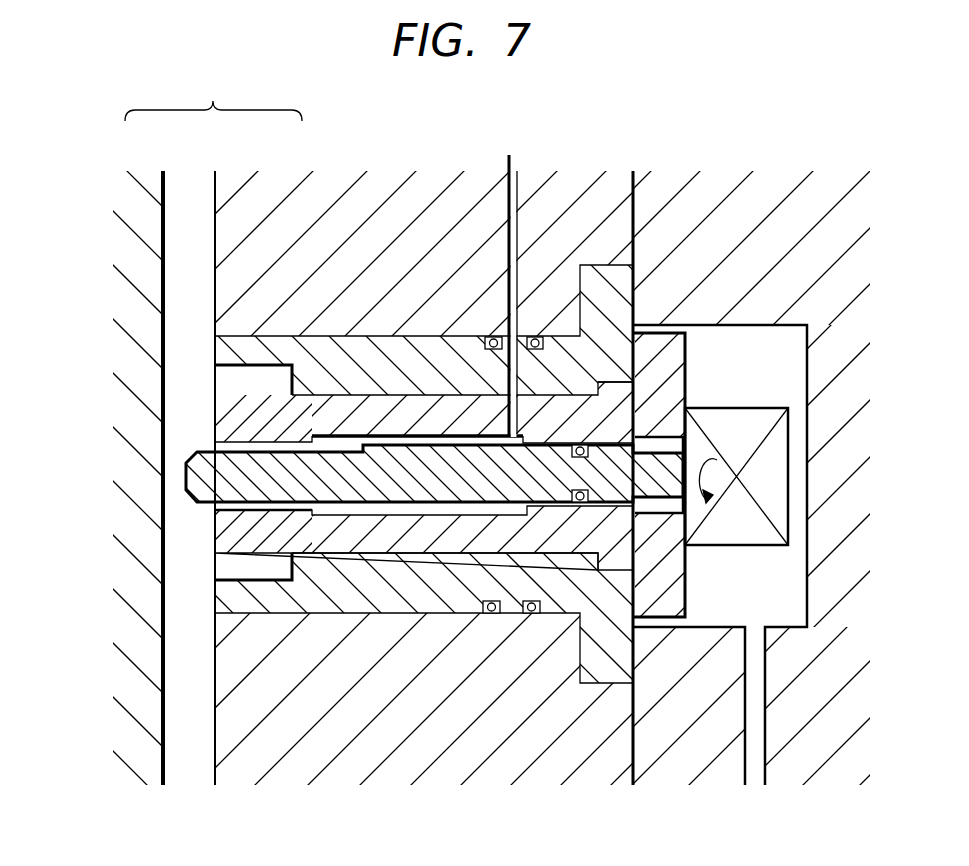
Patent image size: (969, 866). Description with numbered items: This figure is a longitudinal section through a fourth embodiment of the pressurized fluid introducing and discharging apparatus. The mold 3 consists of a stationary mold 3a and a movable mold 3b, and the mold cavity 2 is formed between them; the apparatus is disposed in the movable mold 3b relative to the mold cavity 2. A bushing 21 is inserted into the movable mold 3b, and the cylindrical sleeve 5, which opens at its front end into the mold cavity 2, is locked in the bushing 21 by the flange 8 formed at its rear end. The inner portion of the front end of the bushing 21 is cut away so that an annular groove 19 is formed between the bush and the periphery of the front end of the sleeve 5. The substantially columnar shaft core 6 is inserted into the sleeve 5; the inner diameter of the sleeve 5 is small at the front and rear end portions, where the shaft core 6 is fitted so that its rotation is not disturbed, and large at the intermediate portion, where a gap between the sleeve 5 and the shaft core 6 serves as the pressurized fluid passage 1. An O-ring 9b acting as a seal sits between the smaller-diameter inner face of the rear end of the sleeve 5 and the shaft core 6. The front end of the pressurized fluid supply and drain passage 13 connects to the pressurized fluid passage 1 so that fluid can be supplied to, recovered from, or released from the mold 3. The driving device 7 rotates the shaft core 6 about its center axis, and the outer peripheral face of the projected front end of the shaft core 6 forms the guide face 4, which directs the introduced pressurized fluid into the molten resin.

The pressurized fluid passage 1 is at (400, 510).
The mold cavity 2 is at (178, 558).
The mold 3 is at (213, 97).
The stationary mold 3a is at (144, 190).
The movable mold 3b is at (280, 190).
The guide face 4 is at (197, 455).
The sleeve 5 is at (462, 545).
The shaft core 6 is at (429, 462).
The driving device 7 is at (764, 418).
The flange 8 is at (622, 398).
The O-ring 9b is at (572, 502).
The pressurized fluid supply and drain passage 13 is at (519, 180).
The annular groove 19 is at (267, 380).
The bushing 21 is at (358, 337).